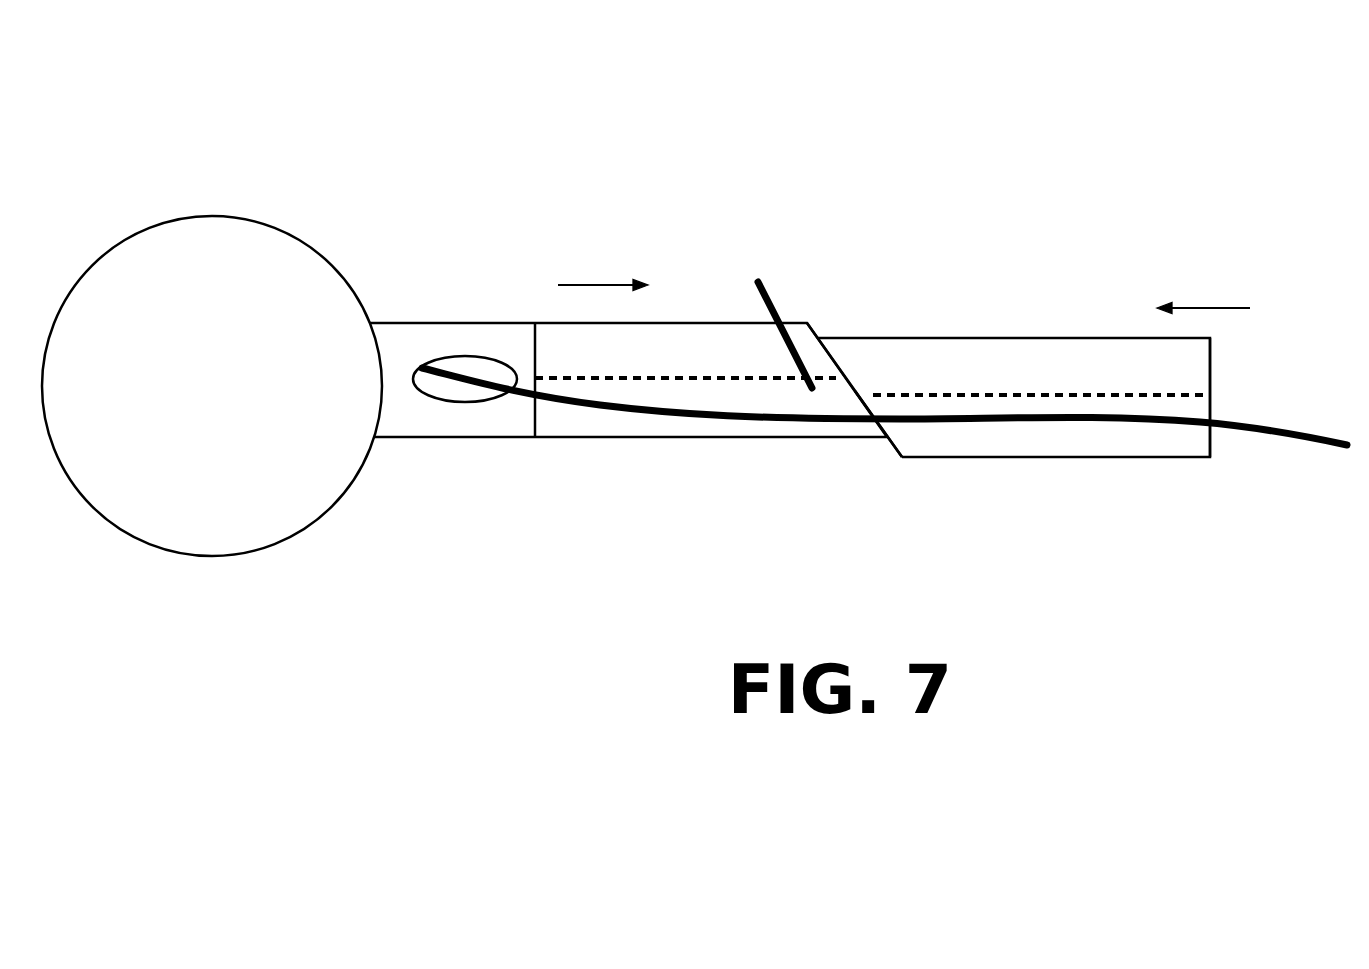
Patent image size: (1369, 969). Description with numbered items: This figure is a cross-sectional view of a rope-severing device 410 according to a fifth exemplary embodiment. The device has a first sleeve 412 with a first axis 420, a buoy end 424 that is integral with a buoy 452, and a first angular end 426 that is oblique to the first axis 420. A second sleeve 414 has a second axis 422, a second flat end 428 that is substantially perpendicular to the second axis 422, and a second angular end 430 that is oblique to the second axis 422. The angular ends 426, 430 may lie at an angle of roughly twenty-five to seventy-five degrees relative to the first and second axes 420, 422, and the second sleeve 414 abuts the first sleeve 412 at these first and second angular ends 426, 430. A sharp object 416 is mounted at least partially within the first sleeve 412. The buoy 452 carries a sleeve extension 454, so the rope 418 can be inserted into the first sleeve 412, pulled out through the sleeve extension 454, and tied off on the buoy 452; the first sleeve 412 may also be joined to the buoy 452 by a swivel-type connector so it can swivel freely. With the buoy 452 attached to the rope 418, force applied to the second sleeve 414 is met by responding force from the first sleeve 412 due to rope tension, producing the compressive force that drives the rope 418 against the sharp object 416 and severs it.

The rope-severing device 410 is at (886, 122).
The first sleeve 412 is at (658, 310).
The second sleeve 414 is at (1029, 328).
The sharp object 416 is at (785, 298).
The rope 418 is at (1254, 411).
The first axis 420 is at (729, 391).
The second axis 422 is at (1111, 406).
The buoy end 424 is at (526, 430).
The first angular end 426 is at (823, 314).
The second flat end 428 is at (1218, 453).
The second angular end 430 is at (876, 450).
The buoy 452 is at (372, 301).
The sleeve extension 454 is at (456, 415).